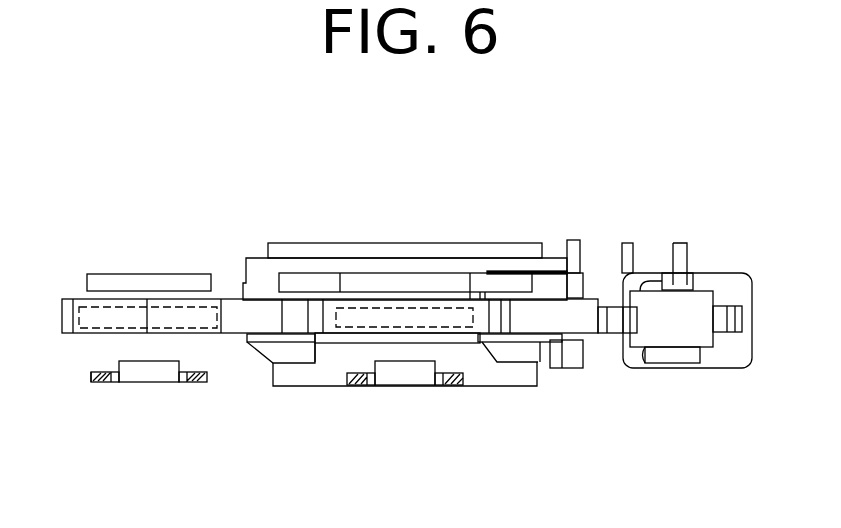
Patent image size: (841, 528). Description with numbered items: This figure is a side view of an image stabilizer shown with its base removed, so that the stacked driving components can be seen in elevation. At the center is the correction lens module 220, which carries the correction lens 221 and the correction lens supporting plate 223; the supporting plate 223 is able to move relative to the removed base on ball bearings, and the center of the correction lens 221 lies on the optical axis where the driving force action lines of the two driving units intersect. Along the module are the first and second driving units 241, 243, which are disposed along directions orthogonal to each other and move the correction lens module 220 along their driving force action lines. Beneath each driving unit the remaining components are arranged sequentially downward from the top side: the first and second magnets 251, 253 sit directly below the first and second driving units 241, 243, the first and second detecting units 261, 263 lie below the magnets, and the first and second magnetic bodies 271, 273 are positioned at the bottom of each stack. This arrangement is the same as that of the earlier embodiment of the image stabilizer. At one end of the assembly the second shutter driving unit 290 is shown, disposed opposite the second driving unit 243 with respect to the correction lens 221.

The correction lens module 220 is at (518, 173).
The correction lens 221 is at (512, 250).
The correction lens supporting plate 223 is at (554, 308).
The first driving unit 241 is at (133, 281).
The second driving unit 243 is at (402, 282).
The first magnet 251 is at (87, 328).
The second magnet 253 is at (355, 327).
The first detecting unit 261 is at (147, 373).
The second detecting unit 263 is at (400, 372).
The first magnetic body 271 is at (197, 381).
The second magnetic body 273 is at (452, 382).
The second shutter driving unit 290 is at (673, 373).